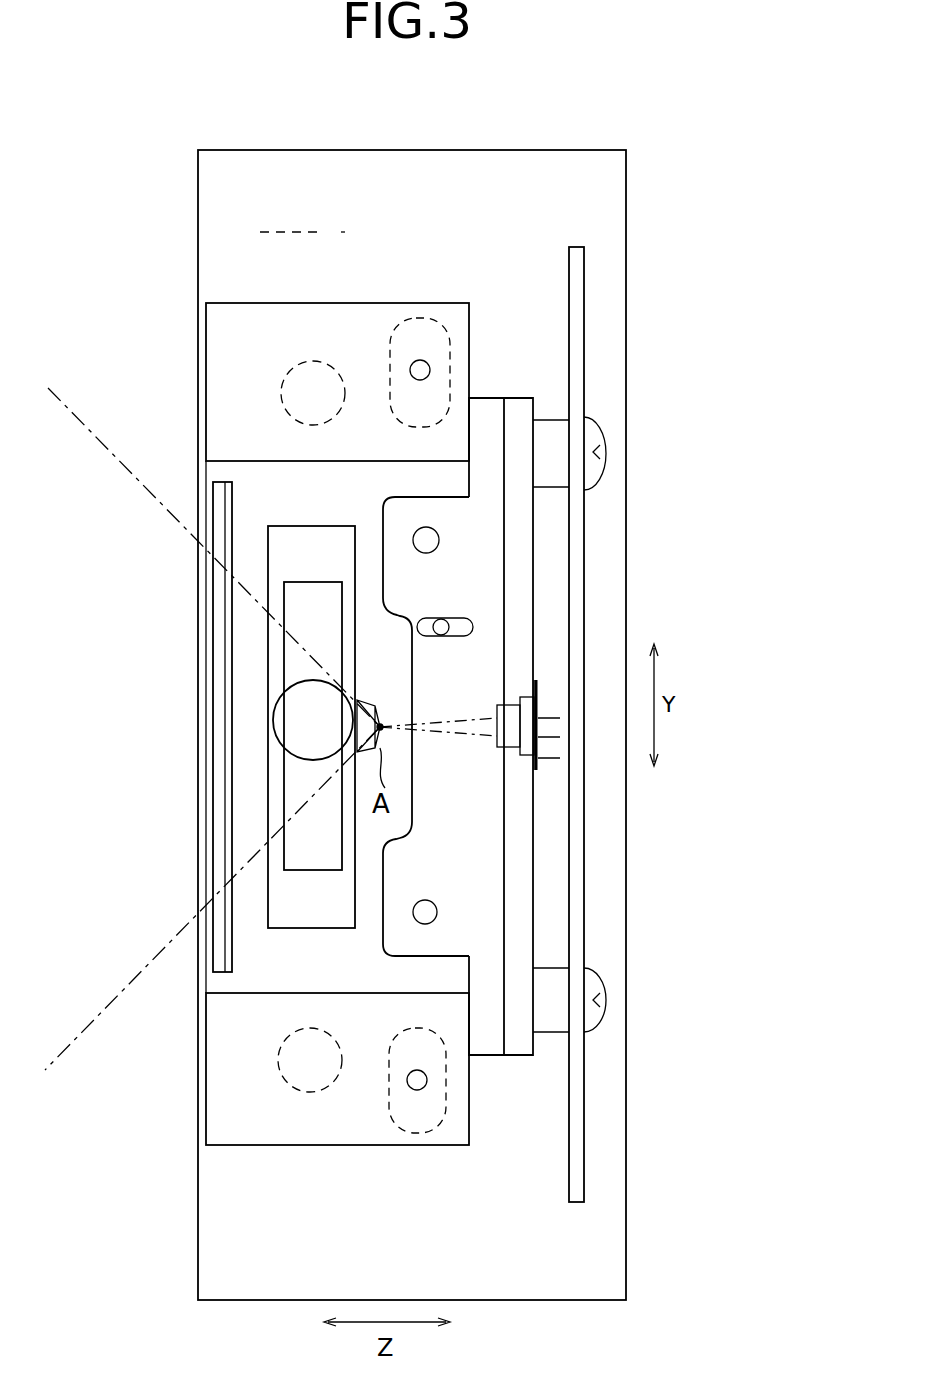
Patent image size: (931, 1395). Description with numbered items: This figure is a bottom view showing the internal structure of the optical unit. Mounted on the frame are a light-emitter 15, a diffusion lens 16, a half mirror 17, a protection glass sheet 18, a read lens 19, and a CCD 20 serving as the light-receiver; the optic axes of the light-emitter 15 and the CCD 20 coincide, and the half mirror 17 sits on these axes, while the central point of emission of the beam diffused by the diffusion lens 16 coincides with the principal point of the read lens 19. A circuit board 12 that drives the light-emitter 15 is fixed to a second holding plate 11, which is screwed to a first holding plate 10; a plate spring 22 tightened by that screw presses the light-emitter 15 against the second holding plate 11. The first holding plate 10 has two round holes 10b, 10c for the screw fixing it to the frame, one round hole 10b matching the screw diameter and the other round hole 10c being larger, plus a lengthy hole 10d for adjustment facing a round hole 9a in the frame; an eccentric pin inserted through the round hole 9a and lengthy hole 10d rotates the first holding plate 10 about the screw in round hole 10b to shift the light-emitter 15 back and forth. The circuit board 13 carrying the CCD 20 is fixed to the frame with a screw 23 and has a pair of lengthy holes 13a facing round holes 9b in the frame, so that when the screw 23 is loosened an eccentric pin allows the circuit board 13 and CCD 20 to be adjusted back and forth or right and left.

The round hole 9a is at (449, 622).
The round holes 9b is at (421, 362).
The first holding plate 10 is at (487, 953).
The round hole 10b is at (414, 915).
The round hole 10c is at (439, 540).
The lengthy hole for adjustment 10d is at (430, 617).
The second holding plate 11 is at (520, 912).
The circuit board 12 is at (584, 862).
The circuit board 13 is at (612, 177).
The lengthy holes for adjustment 13a is at (408, 318).
The light-emitter 15 is at (500, 743).
The diffusion lens 16 is at (370, 700).
The half mirror 17 is at (297, 843).
The protection glass sheet 18 is at (225, 745).
The read lens 19 is at (275, 700).
The CCD 20 is at (292, 538).
The plate spring 22 is at (538, 760).
The screw 23 is at (320, 362).